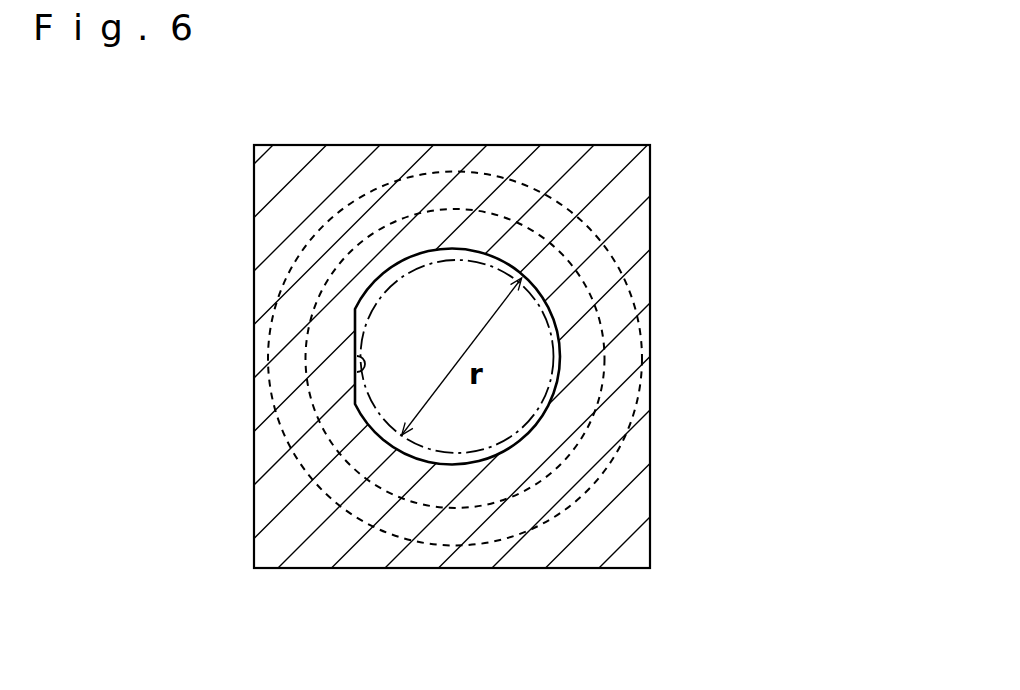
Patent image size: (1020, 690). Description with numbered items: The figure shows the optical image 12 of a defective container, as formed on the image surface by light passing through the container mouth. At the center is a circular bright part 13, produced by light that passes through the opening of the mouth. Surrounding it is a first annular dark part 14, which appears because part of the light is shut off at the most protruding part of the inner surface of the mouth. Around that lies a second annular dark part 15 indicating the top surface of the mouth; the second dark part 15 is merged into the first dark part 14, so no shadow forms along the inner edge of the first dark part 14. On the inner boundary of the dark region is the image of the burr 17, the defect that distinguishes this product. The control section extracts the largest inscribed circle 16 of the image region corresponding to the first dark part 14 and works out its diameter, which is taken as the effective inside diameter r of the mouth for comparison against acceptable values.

The optical image 12 is at (637, 132).
The circular bright part 13 is at (503, 420).
The first annular dark part 14 is at (575, 355).
The second annular dark part 15 is at (625, 396).
The largest inscribed circle 16 is at (428, 263).
The image of the burr 17 is at (360, 370).